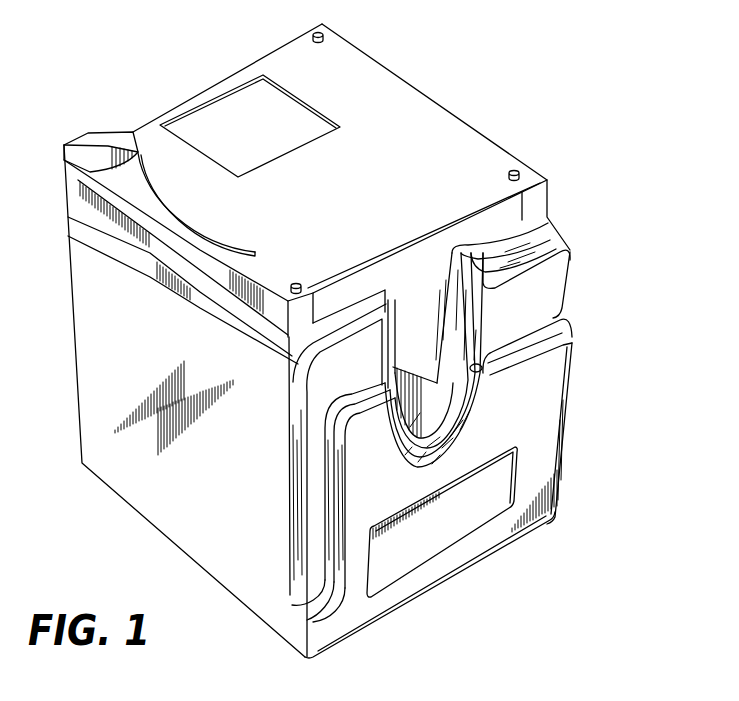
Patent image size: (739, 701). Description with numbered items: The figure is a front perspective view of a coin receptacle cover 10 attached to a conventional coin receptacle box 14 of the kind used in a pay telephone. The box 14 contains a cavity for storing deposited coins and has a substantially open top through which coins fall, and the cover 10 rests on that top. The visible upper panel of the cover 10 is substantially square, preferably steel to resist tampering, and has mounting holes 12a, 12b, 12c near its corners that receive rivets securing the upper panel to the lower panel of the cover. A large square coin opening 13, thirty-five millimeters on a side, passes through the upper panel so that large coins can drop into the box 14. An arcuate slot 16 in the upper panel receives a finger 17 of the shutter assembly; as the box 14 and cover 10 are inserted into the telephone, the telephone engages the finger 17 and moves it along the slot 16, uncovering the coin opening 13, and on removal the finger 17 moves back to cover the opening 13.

The coin receptacle cover 10 is at (326, 339).
The mounting hole 12a is at (302, 288).
The mounting hole 12b is at (531, 178).
The mounting hole 12c is at (324, 42).
The coin opening 13 is at (235, 120).
The coin receptacle box 14 is at (148, 539).
The arcuate slot 16 is at (188, 216).
The finger 17 is at (100, 150).